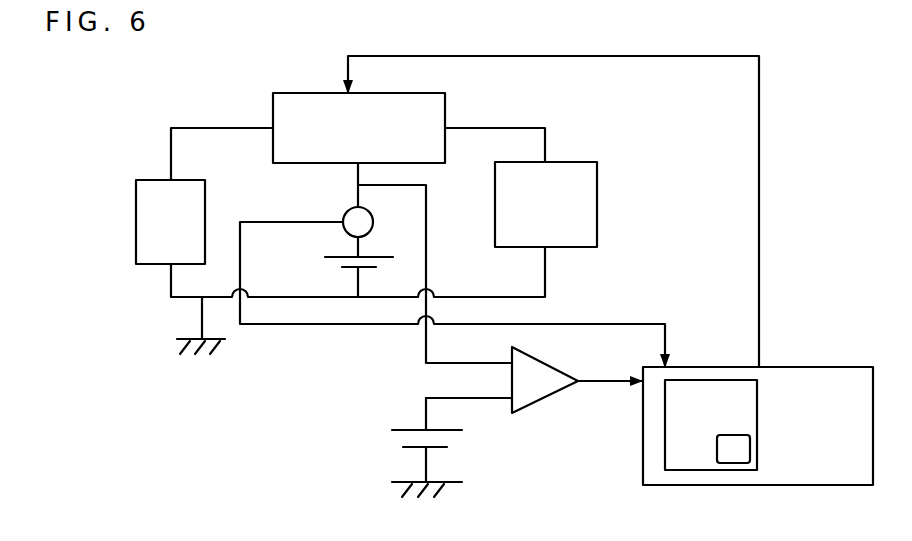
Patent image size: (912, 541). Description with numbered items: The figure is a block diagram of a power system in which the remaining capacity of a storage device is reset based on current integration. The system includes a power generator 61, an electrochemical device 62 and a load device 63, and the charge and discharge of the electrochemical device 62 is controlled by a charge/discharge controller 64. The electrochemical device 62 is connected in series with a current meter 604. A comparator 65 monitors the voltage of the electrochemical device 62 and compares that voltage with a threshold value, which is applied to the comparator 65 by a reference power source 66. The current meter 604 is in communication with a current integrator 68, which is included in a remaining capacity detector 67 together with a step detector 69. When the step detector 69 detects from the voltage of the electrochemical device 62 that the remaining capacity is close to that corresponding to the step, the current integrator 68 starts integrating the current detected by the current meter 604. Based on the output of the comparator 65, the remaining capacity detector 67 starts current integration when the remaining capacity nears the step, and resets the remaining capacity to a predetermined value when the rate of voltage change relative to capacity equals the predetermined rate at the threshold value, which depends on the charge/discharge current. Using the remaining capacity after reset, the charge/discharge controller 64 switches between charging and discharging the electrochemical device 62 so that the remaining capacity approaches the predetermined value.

The power generator 61 is at (156, 222).
The electrochemical device 62 is at (384, 257).
The load device 63 is at (575, 172).
The charge/discharge controller 64 is at (300, 110).
The current meter 604 is at (352, 209).
The comparator 65 is at (540, 392).
The reference power source 66 is at (410, 430).
The remaining capacity detector 67 is at (800, 380).
The current integrator 68 is at (688, 463).
The step detector 69 is at (740, 452).